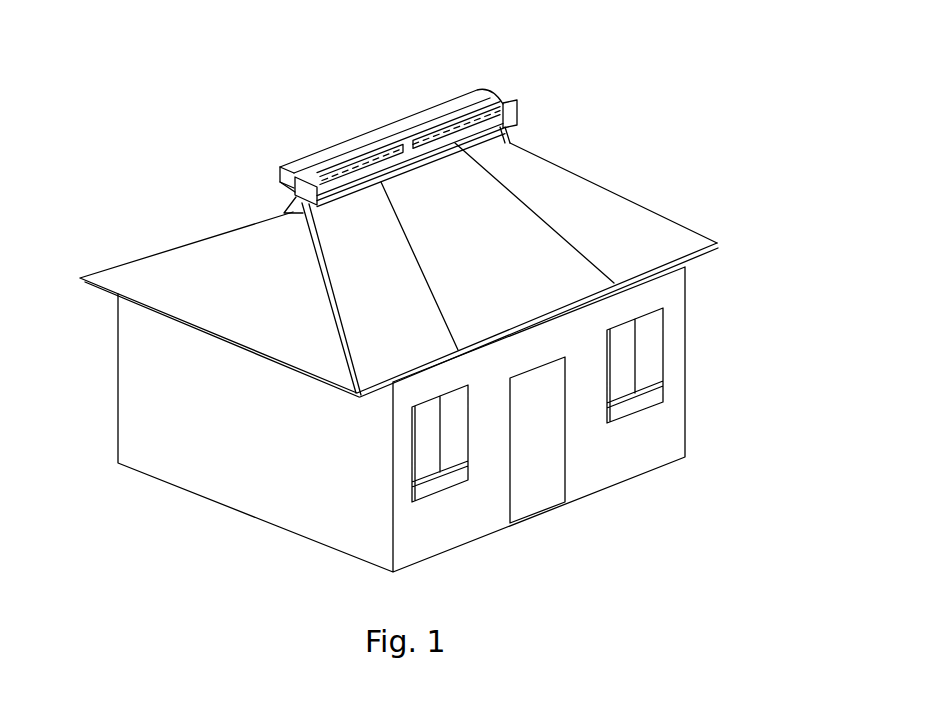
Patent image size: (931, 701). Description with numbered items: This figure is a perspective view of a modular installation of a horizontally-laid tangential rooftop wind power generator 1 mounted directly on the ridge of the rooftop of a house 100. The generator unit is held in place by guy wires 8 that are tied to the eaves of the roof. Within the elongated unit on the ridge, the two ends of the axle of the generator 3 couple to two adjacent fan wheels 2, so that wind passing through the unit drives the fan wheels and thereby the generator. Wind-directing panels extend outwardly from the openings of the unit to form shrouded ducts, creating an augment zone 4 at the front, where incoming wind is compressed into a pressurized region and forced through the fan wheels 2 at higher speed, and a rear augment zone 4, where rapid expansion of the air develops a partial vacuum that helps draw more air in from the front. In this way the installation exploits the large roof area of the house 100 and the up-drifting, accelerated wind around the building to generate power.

The horizontally-laid tangential rooftop wind power generator 1 is at (294, 190).
The fan wheels 2 is at (510, 143).
The generator 3 is at (407, 144).
The augment zone 4 is at (368, 135).
The guy wires 8 is at (580, 246).
The house 100 is at (262, 452).